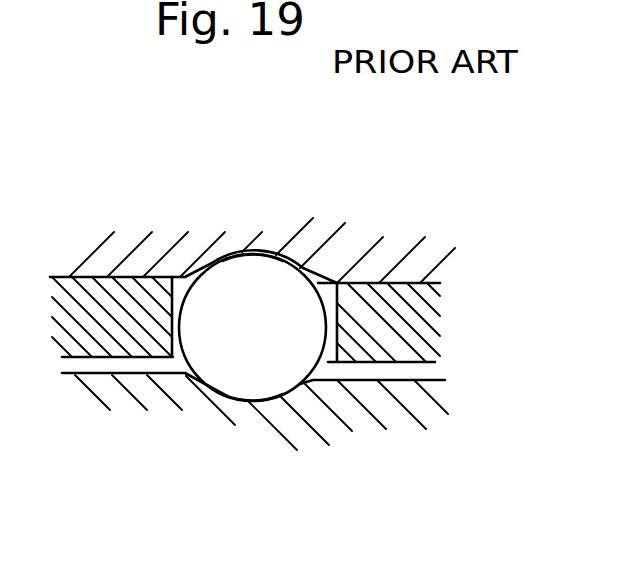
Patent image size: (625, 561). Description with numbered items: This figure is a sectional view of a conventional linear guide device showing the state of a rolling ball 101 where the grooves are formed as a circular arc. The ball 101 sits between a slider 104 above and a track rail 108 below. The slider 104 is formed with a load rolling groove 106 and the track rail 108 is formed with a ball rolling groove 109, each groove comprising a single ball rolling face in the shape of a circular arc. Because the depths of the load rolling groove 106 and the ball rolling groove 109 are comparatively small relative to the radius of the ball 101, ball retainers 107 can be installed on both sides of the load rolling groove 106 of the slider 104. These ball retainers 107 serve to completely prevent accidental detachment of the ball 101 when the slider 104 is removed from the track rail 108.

The ball 101 is at (271, 362).
The slider 104 is at (161, 258).
The load rolling groove 106 is at (278, 263).
The ball retainers 107 is at (90, 292).
The track rail 108 is at (380, 400).
The ball rolling groove 109 is at (244, 400).